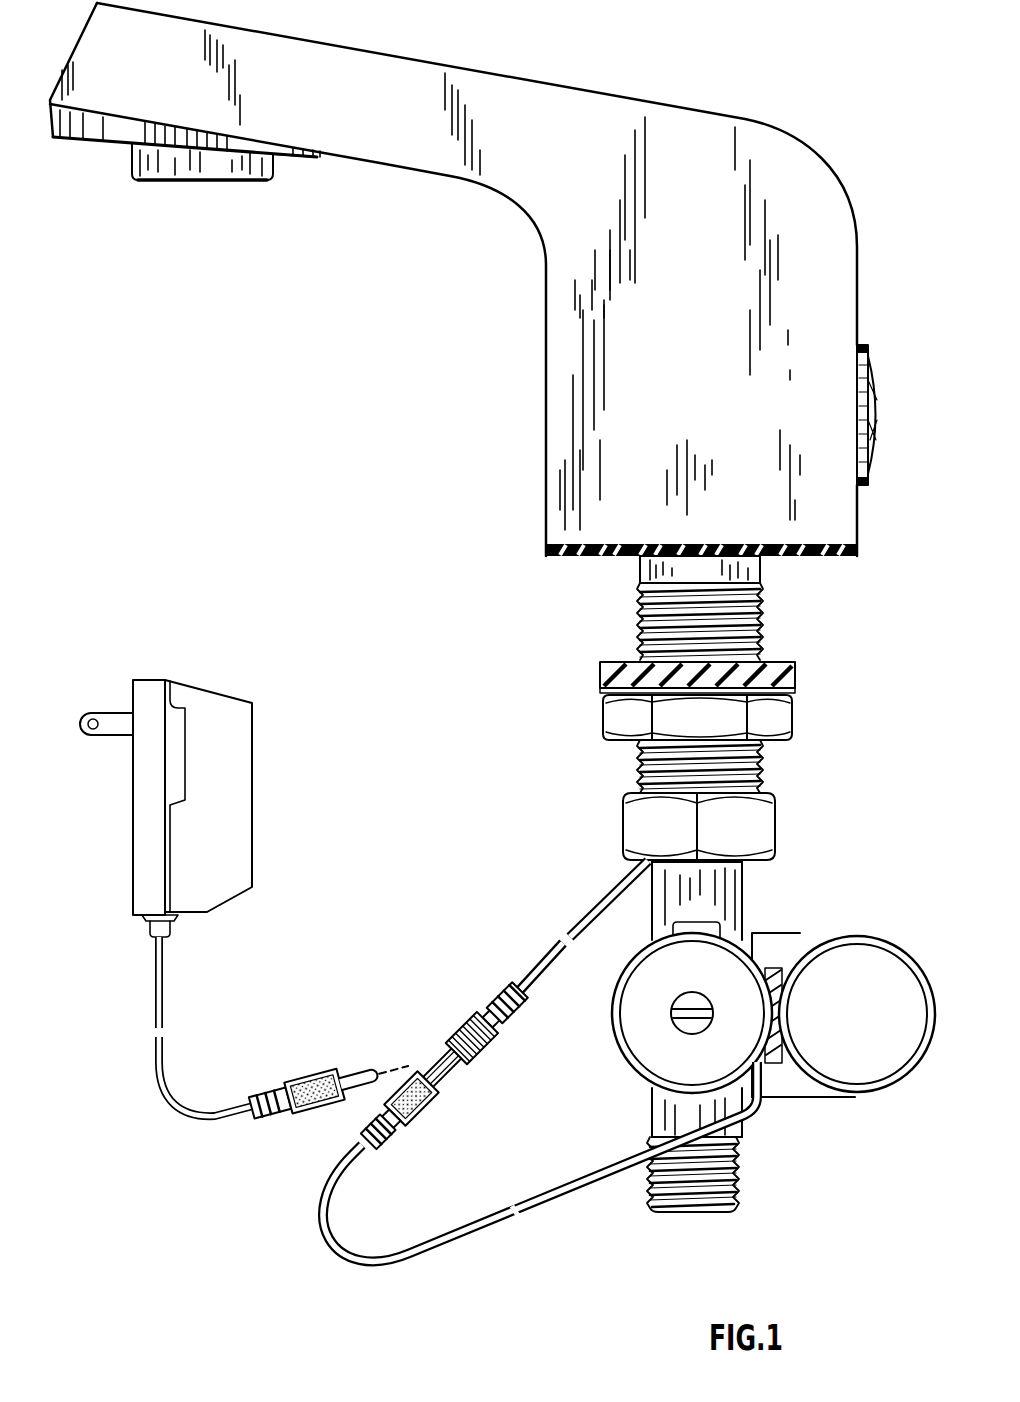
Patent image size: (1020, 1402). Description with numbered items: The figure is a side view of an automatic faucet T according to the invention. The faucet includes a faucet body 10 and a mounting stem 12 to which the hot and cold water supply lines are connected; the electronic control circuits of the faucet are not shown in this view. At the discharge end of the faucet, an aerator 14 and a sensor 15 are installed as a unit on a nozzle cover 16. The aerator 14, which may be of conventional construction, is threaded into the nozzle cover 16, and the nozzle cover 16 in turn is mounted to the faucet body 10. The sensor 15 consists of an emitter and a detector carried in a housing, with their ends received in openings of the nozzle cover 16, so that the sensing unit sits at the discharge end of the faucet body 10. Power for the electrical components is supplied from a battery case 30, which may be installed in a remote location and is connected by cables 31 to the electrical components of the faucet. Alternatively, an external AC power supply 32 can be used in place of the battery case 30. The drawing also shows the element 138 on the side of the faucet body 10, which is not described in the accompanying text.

The automatic faucet T is at (635, 80).
The faucet body 10 is at (807, 150).
The mounting stem 12 is at (753, 762).
The aerator 14 is at (198, 167).
The sensor 15 is at (107, 133).
The nozzle cover 16 is at (283, 150).
The battery case 30 is at (855, 938).
The cables 31 is at (612, 892).
The external AC power supply 32 is at (223, 808).
The sensor window 138 is at (867, 463).